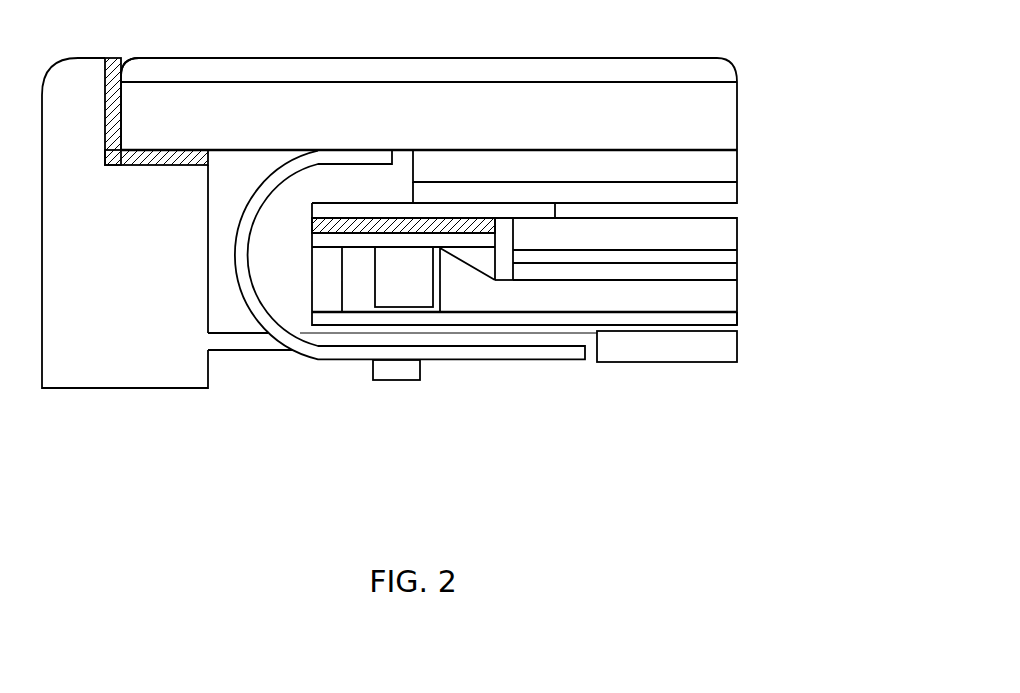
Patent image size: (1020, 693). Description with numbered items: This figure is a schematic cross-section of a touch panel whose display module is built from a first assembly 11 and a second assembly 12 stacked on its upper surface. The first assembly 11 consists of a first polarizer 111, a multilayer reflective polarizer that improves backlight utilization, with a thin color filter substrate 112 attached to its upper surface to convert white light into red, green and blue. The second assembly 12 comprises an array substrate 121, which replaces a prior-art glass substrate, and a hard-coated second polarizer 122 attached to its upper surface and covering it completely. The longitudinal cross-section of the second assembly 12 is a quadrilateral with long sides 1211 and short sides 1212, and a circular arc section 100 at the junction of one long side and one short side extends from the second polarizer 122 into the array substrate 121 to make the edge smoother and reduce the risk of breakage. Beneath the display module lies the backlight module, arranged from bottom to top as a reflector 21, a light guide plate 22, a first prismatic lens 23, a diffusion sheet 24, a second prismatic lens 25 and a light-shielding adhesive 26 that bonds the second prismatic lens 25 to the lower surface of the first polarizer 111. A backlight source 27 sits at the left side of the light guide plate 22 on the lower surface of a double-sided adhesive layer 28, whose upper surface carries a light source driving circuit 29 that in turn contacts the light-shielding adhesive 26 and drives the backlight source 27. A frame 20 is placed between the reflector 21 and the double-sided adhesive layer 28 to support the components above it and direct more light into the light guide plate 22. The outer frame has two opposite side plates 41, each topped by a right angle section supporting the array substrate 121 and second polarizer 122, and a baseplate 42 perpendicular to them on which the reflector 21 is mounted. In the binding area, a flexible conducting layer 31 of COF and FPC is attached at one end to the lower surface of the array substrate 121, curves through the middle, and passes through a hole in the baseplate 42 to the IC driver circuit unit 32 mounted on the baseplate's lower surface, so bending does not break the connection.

The circular arc section 100 is at (135, 56).
The second assembly 12 is at (502, 102).
The array substrate 121 is at (738, 128).
The second polarizer 122 is at (738, 75).
The long side 1211 is at (123, 106).
The short side 1212 is at (268, 57).
The first assembly 11 is at (649, 172).
The first polarizer 111 is at (738, 190).
The color filter substrate 112 is at (738, 170).
The frame 20 is at (538, 285).
The reflector 21 is at (738, 317).
The light guide plate 22 is at (738, 297).
The first prismatic lens 23 is at (738, 270).
The diffusion sheet 24 is at (738, 255).
The second prismatic lens 25 is at (738, 237).
The light-shielding adhesive 26 is at (406, 208).
The backlight source 27 is at (406, 290).
The double-sided adhesive layer 28 is at (346, 245).
The light source driving circuit 29 is at (345, 228).
The conducting layer 31 is at (482, 362).
The IC driver circuit unit 32 is at (403, 366).
The side plate 41 is at (167, 388).
The baseplate 42 is at (222, 342).